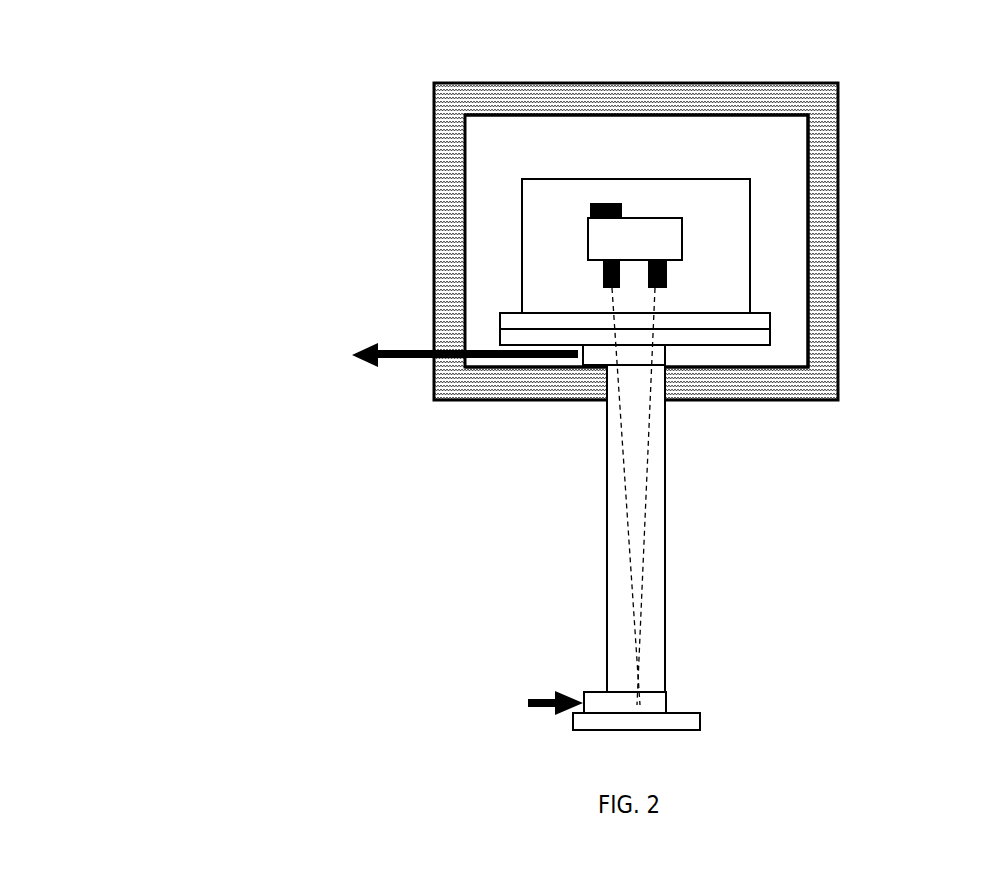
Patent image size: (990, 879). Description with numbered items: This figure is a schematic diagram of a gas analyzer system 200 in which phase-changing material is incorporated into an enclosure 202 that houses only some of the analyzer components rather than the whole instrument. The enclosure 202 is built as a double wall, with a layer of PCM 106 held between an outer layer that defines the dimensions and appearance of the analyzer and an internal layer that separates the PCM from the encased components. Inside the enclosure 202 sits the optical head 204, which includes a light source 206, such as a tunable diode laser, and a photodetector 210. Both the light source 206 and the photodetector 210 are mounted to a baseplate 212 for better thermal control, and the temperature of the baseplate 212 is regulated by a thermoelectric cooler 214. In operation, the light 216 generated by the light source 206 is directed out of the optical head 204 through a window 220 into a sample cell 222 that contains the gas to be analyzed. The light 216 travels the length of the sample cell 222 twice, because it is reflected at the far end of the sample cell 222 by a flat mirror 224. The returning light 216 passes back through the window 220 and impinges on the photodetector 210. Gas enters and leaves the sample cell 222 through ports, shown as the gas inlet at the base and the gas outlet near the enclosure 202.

The system 200 is at (170, 98).
The layer of PCM 106 is at (798, 105).
The enclosure 202 is at (418, 118).
The optical head 204 is at (738, 213).
The light source 206 is at (603, 280).
The photodetector 210 is at (667, 277).
The baseplate 212 is at (663, 232).
The thermoelectric cooler 214 is at (590, 203).
The light 216 is at (624, 468).
The window 220 is at (632, 330).
The sample cell 222 is at (614, 605).
The flat mirror 224 is at (644, 710).